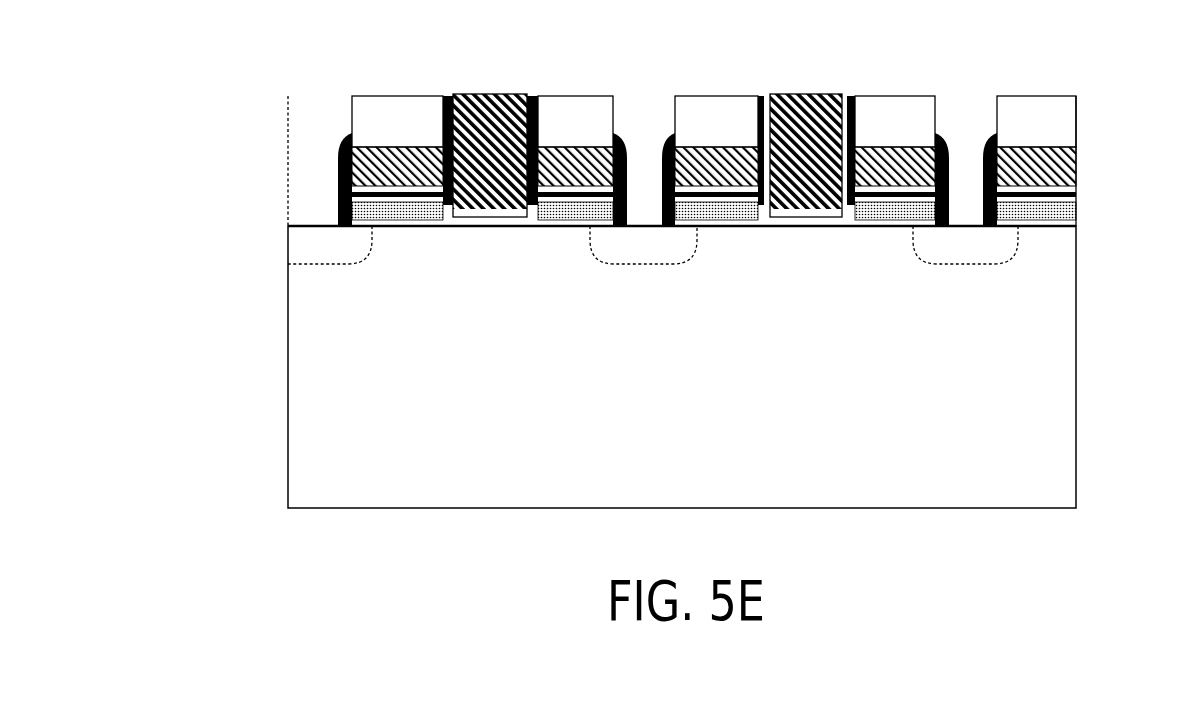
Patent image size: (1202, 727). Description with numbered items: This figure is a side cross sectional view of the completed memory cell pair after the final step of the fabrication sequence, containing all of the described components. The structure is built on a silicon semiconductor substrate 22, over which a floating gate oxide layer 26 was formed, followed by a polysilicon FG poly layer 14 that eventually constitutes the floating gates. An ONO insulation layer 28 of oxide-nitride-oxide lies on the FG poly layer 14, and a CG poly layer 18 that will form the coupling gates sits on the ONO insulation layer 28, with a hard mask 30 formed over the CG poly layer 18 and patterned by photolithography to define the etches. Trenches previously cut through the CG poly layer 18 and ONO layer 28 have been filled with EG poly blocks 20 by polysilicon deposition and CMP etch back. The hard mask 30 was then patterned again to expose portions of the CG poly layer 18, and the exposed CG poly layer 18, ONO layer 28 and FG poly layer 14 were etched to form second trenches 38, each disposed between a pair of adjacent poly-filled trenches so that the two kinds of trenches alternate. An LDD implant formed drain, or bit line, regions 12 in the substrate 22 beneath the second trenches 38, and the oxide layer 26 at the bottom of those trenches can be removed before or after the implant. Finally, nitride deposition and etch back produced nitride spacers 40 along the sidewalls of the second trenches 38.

The drain (bit line) regions 12 is at (932, 252).
The FG poly layer 14 is at (340, 210).
The CG poly layer 18 is at (340, 163).
The EG poly blocks 20 is at (485, 105).
The silicon semiconductor substrate 22 is at (375, 461).
The floating gate oxide layer 26 is at (1078, 223).
The ONO insulation layer 28 is at (1078, 197).
The hard mask 30 is at (1078, 128).
The second trenches 38 is at (969, 128).
The nitride spacers 40 is at (620, 143).